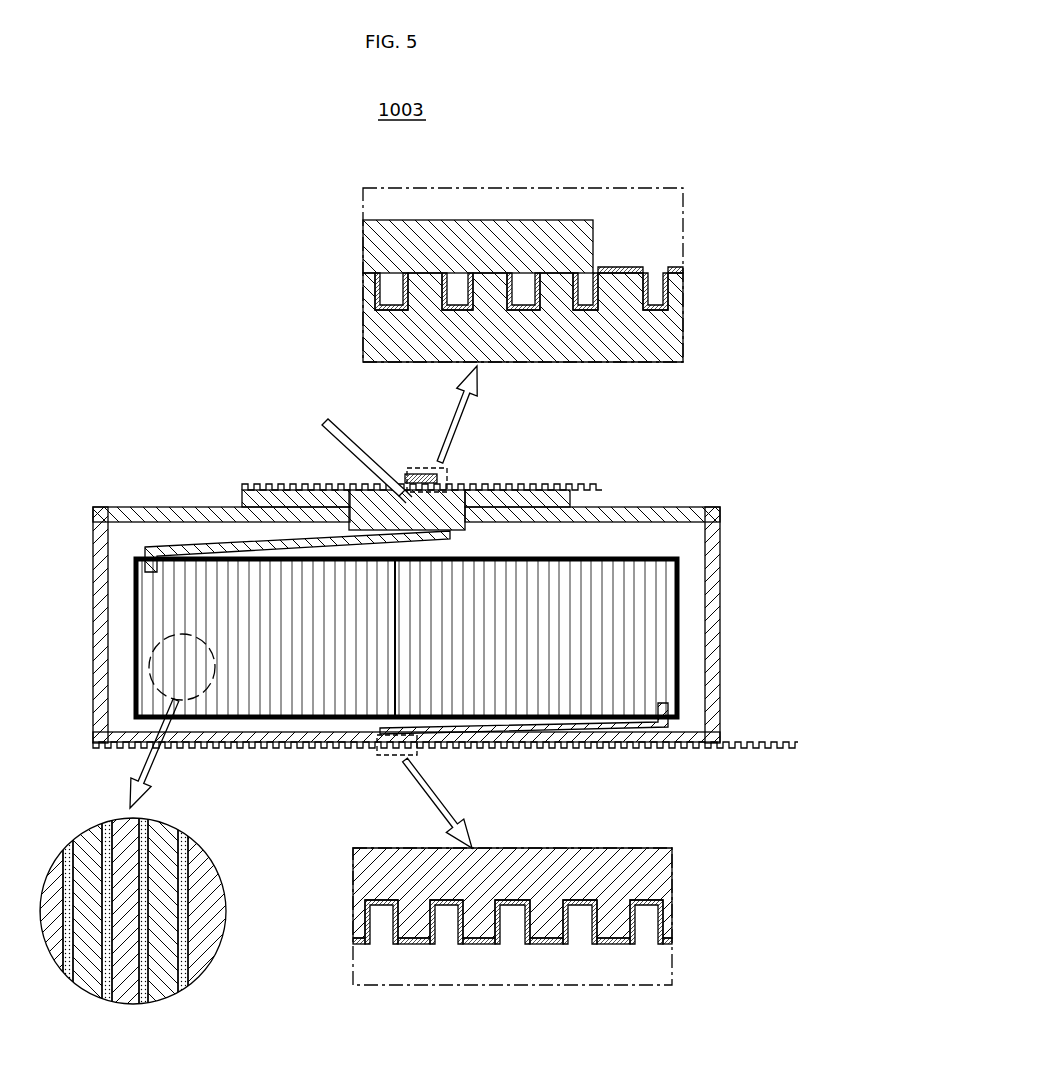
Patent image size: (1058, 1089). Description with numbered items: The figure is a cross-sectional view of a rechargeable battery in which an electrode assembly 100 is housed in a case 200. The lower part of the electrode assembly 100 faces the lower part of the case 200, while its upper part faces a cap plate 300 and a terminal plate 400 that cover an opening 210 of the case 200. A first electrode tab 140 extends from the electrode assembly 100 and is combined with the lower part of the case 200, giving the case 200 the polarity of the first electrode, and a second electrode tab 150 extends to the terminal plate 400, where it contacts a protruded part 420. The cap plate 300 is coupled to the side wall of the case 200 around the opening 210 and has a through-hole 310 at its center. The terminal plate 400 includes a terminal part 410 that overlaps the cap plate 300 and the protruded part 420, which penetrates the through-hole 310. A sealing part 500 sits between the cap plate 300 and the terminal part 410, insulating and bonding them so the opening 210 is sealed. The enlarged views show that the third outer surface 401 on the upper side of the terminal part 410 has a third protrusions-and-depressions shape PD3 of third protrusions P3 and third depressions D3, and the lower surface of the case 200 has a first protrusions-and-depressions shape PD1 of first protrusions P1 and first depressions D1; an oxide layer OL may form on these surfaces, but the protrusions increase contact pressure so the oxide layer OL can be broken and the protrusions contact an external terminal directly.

The electrode assembly 100 is at (329, 680).
The first electrode tab 140 is at (620, 728).
The second electrode tab 150 is at (188, 547).
The case 200 is at (730, 705).
The opening 210 is at (617, 512).
The cap plate 300 is at (682, 496).
The through-hole 310 is at (392, 504).
The terminal plate 400 is at (257, 477).
The third outer surface 401 is at (512, 490).
The terminal part 410 is at (295, 490).
The protruded part 420 is at (445, 515).
The sealing part 500 is at (549, 492).
The third protrusions P3 is at (491, 292).
The third depressions D3 is at (525, 312).
The third protrusions-and-depressions shape PD3 is at (555, 290).
The oxide layer OL is at (620, 268).
The first protrusions P1 is at (470, 935).
The first depressions D1 is at (508, 900).
The first protrusions-and-depressions shape PD1 is at (555, 928).